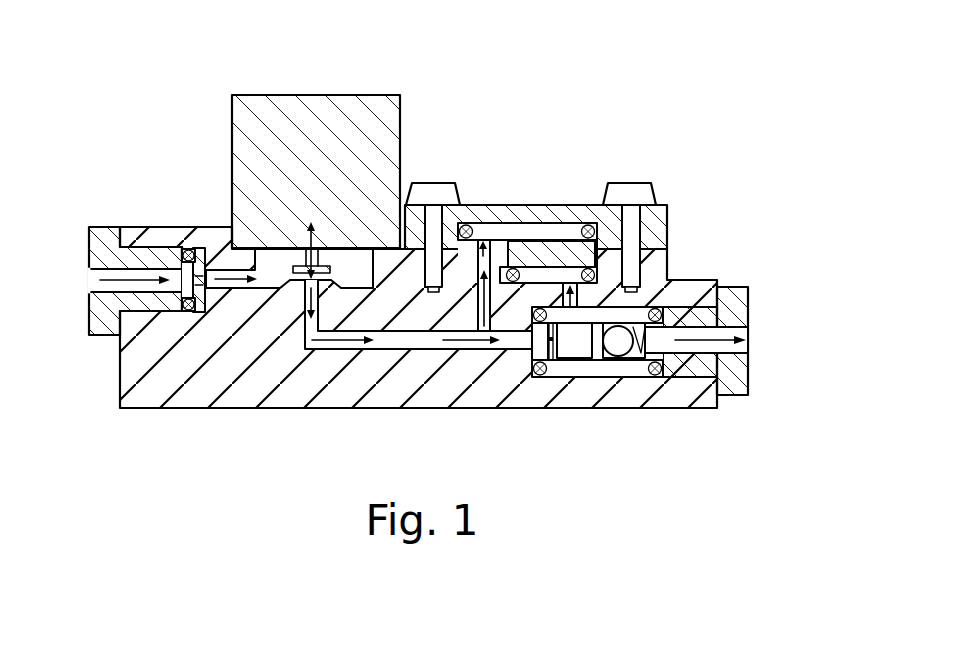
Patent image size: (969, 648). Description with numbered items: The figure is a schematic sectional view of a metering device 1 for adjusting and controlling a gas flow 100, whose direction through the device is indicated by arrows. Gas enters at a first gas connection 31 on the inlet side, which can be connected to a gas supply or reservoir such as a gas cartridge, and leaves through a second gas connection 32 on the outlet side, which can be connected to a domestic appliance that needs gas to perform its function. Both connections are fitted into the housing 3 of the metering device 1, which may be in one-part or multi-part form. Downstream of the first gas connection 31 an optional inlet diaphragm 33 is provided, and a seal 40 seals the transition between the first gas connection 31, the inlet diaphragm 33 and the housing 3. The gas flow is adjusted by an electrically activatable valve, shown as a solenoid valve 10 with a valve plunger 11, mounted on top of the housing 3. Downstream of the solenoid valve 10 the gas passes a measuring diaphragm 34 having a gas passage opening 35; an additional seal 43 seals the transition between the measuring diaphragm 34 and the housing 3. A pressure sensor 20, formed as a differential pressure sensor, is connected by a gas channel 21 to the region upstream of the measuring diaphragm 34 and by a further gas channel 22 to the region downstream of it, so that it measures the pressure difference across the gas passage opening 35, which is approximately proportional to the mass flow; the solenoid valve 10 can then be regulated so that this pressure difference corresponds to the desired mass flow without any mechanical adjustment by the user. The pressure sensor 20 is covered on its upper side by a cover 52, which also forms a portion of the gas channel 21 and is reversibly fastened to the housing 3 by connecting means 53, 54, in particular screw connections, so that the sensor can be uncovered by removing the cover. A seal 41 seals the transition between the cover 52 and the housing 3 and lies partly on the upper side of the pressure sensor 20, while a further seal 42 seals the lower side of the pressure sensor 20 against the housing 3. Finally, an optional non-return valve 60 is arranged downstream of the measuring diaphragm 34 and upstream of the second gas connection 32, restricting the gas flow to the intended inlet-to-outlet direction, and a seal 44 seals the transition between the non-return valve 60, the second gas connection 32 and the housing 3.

The metering device 1 is at (81, 58).
The housing 3 is at (133, 380).
The solenoid valve 10 is at (318, 130).
The valve plunger 11 is at (306, 255).
The pressure sensor 20 is at (547, 248).
The gas channel 21 is at (476, 222).
The further gas channel 22 is at (590, 301).
The first gas connection 31 is at (100, 238).
The second gas connection 32 is at (733, 305).
The inlet diaphragm 33 is at (202, 247).
The measuring diaphragm 34 is at (566, 349).
The gas passage opening 35 is at (631, 367).
The seal 40 is at (190, 312).
The seal 41 is at (470, 243).
The further seal 42 is at (518, 280).
The additional seal 43 is at (542, 383).
The seal 44 is at (660, 356).
The cover 52 is at (663, 220).
The connecting means 53 is at (436, 196).
The connecting means 54 is at (630, 197).
The non-return valve 60 is at (664, 365).
The gas flow 100 is at (252, 281).